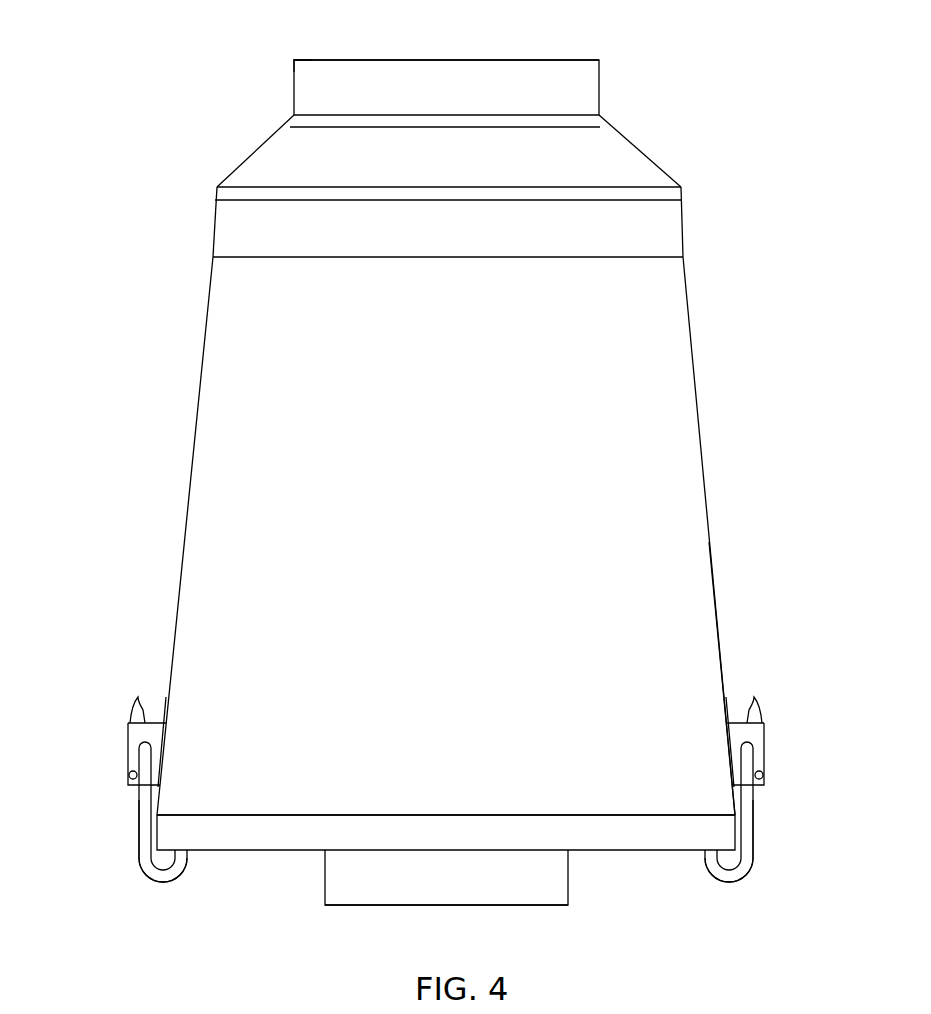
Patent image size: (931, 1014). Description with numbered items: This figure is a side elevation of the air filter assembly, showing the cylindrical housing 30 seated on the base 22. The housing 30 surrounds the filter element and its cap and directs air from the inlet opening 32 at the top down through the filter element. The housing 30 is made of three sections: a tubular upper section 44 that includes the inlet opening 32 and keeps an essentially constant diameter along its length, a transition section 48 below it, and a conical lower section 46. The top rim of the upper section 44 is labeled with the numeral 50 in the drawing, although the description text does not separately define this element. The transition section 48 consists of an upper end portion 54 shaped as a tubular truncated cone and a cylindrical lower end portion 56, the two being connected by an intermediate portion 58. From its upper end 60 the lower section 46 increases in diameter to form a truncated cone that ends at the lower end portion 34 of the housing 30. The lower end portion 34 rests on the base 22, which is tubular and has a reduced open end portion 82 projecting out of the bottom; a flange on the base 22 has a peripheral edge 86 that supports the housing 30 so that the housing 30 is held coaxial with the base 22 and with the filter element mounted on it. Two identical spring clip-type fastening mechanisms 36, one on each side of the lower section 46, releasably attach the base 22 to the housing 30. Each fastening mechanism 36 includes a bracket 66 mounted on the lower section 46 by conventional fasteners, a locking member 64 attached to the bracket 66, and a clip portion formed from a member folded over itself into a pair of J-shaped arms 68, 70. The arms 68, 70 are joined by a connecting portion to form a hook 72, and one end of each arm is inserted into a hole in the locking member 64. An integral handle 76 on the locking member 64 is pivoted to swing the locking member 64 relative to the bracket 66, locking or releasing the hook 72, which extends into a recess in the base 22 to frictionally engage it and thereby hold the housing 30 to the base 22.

The base 22 is at (510, 918).
The cylindrical housing 30 is at (688, 352).
The inlet opening 32 is at (448, 60).
The lower end portion 34 is at (608, 802).
The spring clip-type fastening mechanism 36 is at (110, 745).
The upper section 44 is at (592, 83).
The conical lower section 46 is at (688, 542).
The transition section 48 is at (638, 150).
The top edge 50 is at (300, 60).
The upper end portion 54 is at (600, 116).
The lower end portion 56 is at (220, 240).
The intermediate portion 58 is at (216, 191).
The upper end 60 is at (235, 258).
The locking member 64 is at (128, 767).
The bracket 66 is at (156, 708).
The J-shaped arm 68 is at (757, 830).
The J-shaped arm 70 is at (135, 830).
The hook 72 is at (183, 877).
The handle 76 is at (137, 708).
The reduced open end portion 82 is at (348, 895).
The peripheral edge 86 is at (303, 828).